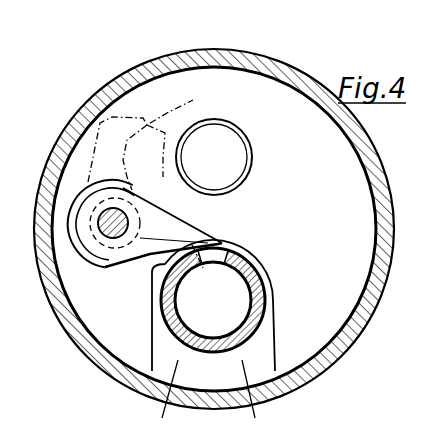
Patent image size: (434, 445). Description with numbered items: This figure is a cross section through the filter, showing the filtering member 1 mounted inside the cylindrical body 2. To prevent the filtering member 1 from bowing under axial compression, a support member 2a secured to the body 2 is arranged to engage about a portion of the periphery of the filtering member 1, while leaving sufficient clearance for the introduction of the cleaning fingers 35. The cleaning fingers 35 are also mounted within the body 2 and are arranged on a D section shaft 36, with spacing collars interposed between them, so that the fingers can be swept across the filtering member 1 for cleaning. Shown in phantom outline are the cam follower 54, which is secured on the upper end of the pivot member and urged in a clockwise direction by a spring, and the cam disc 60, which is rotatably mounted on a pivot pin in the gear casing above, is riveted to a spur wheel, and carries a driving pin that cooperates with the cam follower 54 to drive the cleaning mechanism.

The filtering member 1 is at (267, 296).
The cylindrical body 2 is at (332, 362).
The support member 2a is at (250, 258).
The cleaning finger 35 is at (172, 234).
The D section shaft 36 is at (108, 232).
The cam follower 54 is at (98, 127).
The cam disc 60 is at (193, 108).